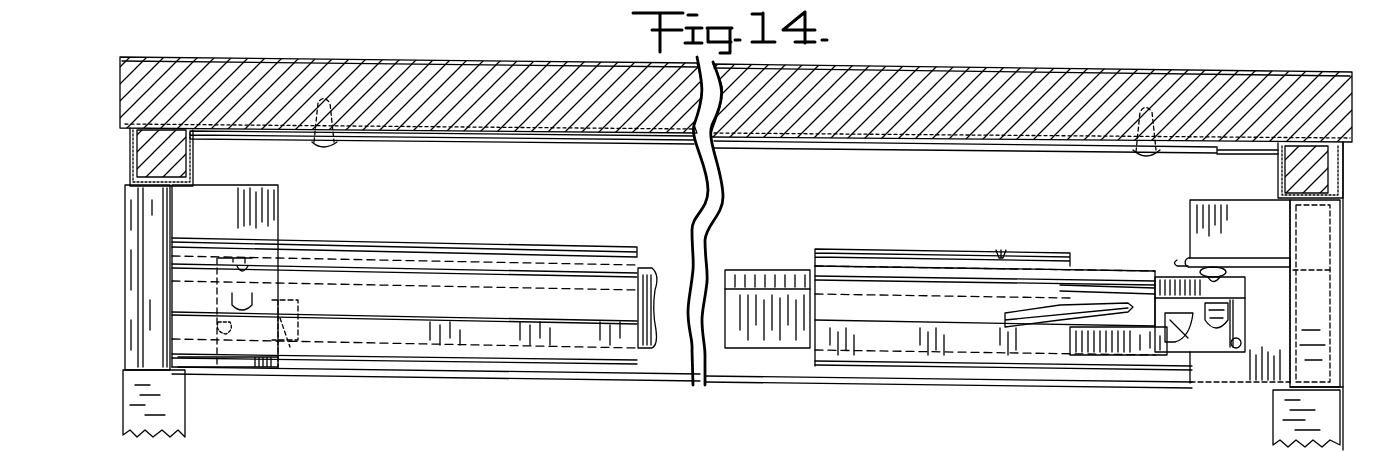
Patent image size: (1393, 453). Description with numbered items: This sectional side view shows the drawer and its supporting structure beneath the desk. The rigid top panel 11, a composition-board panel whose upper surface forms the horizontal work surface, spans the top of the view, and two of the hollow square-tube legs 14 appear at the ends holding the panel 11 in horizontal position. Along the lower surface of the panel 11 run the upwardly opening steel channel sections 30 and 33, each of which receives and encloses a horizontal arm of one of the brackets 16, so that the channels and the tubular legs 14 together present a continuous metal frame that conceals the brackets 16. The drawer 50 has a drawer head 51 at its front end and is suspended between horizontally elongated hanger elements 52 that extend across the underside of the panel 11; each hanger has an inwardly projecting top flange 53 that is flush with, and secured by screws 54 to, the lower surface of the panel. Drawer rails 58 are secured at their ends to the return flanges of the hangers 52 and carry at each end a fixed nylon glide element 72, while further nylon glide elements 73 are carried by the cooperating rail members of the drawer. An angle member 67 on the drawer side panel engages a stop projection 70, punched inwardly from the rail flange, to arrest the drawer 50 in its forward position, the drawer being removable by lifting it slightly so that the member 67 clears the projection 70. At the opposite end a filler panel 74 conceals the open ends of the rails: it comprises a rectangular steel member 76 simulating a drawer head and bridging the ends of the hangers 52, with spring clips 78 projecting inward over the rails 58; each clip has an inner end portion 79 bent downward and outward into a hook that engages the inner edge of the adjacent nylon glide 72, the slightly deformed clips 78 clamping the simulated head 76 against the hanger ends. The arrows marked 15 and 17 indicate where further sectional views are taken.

The top panel 11 is at (365, 64).
The legs 14 is at (135, 407).
The section line 15- 15 is at (241, 150).
The brackets 16 is at (1001, 250).
The section line 17- 17 is at (1181, 247).
The channel section 30 is at (1342, 160).
The channel section 33 is at (130, 162).
The drawer 50 is at (522, 366).
The drawer head 51 is at (148, 278).
The hanger elements 52 is at (1232, 376).
The top flange 53 is at (490, 141).
The screws 54 is at (330, 146).
The drawer rails 58 is at (1242, 300).
The angle member 67 is at (1097, 318).
The stop projection 70 is at (297, 378).
The glide element 72 is at (242, 250).
The glide elements 73 is at (960, 258).
The filler panel 74 is at (1318, 392).
The simulated drawer head 76 is at (1337, 310).
The spring clips 78 is at (1270, 267).
The inner end portion 79 is at (1193, 270).